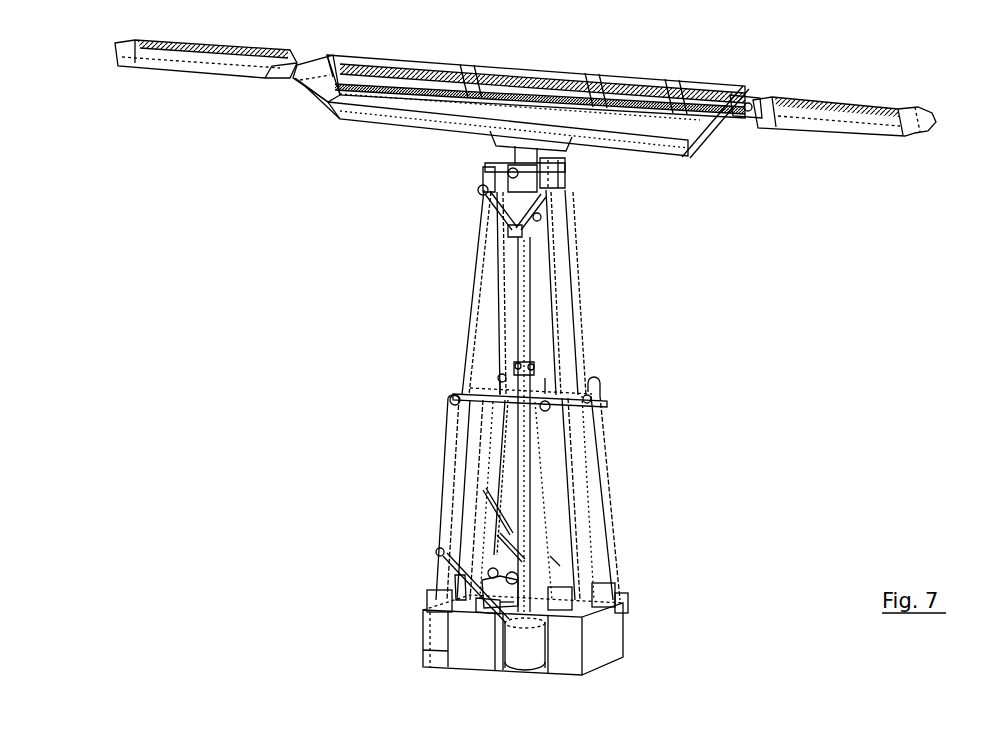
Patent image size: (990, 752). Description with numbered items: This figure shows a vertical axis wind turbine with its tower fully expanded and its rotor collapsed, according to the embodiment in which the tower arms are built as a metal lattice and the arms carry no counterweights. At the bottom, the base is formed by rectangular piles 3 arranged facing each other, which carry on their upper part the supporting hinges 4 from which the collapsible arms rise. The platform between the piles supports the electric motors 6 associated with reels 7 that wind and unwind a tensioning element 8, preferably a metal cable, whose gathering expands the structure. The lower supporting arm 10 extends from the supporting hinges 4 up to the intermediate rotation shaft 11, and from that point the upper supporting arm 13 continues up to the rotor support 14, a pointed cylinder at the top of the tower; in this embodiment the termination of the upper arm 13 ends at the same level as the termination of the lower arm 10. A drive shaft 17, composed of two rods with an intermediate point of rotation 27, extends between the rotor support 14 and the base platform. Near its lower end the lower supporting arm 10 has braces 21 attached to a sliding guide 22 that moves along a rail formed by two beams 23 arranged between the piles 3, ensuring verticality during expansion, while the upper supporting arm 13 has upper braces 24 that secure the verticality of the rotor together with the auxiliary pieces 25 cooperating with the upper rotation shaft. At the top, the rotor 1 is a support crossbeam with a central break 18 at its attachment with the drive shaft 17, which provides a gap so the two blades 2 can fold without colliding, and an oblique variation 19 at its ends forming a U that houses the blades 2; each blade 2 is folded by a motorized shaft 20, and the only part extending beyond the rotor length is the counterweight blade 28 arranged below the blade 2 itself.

The rotor 1 is at (407, 112).
The blade 2 is at (520, 68).
The pile 3 is at (622, 643).
The supporting hinge 4 is at (612, 588).
The electric motor 6 is at (493, 592).
The reel 7 is at (493, 574).
The tensioning element 8 is at (477, 463).
The lower supporting arm 10 is at (452, 440).
The intermediate rotation shaft 11 is at (560, 402).
The upper supporting arm 13 is at (474, 289).
The rotor support 14 is at (525, 187).
The drive shaft 17 is at (530, 286).
The break 18 is at (505, 134).
The oblique variation 19 is at (323, 100).
The motorized shaft 20 is at (758, 100).
The brace 21 is at (465, 610).
The sliding guide 22 is at (555, 560).
The beam 23 is at (512, 668).
The upper brace 24 is at (497, 210).
The auxiliary piece 25 is at (528, 172).
The intermediate point of rotation 27 is at (534, 364).
The counterweight blade 28 is at (848, 107).